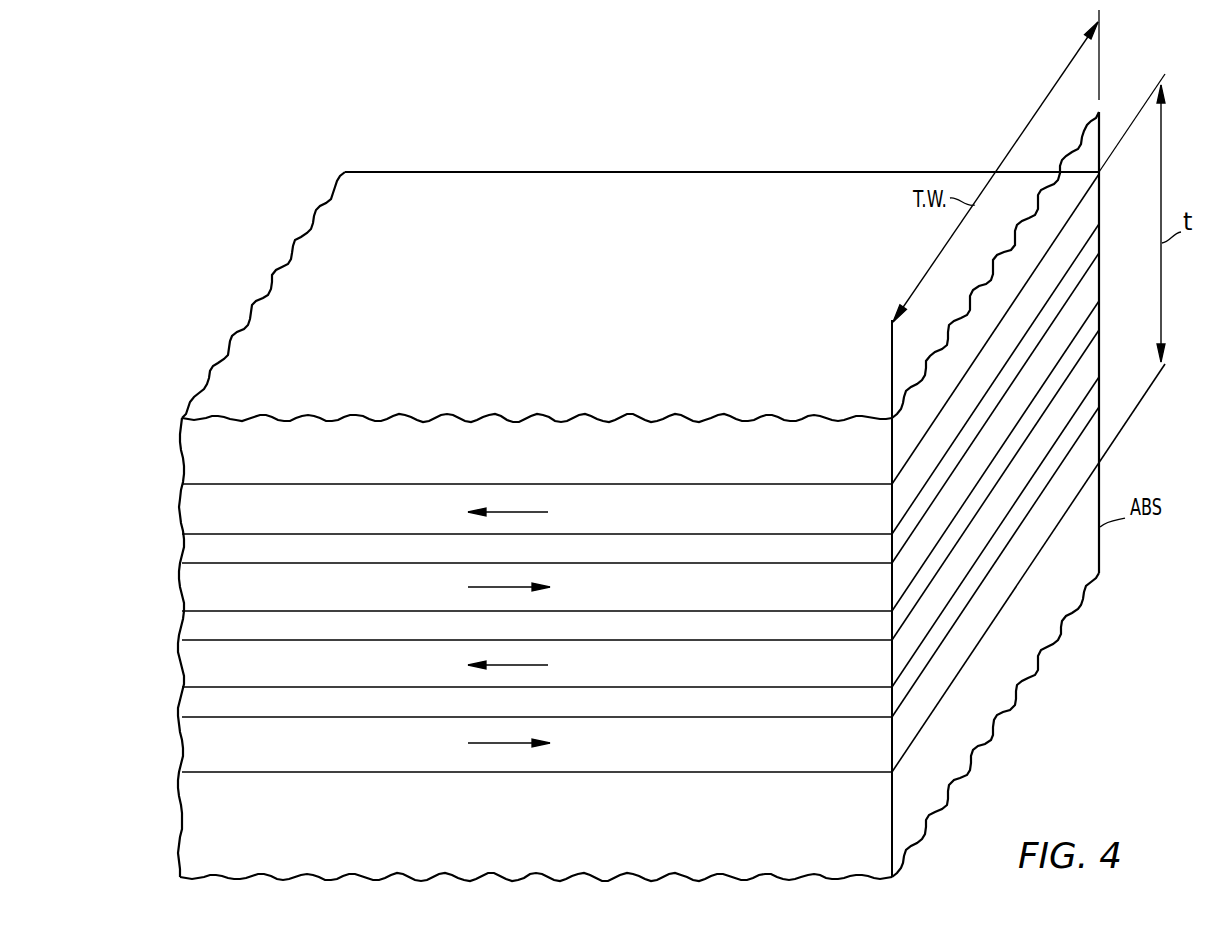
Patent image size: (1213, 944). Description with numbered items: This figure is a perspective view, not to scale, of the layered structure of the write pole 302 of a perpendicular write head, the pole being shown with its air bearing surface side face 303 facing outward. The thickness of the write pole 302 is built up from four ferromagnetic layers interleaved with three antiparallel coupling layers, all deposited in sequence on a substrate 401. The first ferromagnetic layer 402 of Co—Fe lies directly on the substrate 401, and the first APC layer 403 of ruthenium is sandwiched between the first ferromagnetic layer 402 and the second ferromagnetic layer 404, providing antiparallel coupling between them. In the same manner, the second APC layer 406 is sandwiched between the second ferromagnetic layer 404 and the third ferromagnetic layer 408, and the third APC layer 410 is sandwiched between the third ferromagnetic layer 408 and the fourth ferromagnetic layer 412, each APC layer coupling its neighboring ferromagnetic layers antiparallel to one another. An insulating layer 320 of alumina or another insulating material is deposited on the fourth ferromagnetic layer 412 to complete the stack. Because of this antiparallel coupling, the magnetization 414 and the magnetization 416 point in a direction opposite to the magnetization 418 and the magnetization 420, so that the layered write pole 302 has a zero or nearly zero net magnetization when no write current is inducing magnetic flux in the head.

The write pole 302 is at (702, 172).
The air bearing surface side face 303 is at (977, 645).
The insulating layer 320 is at (181, 454).
The substrate 401 is at (540, 831).
The first ferromagnetic layer 402 is at (179, 746).
The first APC layer 403 is at (180, 704).
The second ferromagnetic layer 404 is at (181, 665).
The second APC layer 406 is at (181, 629).
The third ferromagnetic layer 408 is at (181, 591).
The third APC layer 410 is at (182, 551).
The fourth ferromagnetic layer 412 is at (181, 513).
The magnetization 414 is at (475, 742).
The magnetization 416 is at (546, 664).
The magnetization 418 is at (475, 586).
The magnetization 420 is at (546, 511).